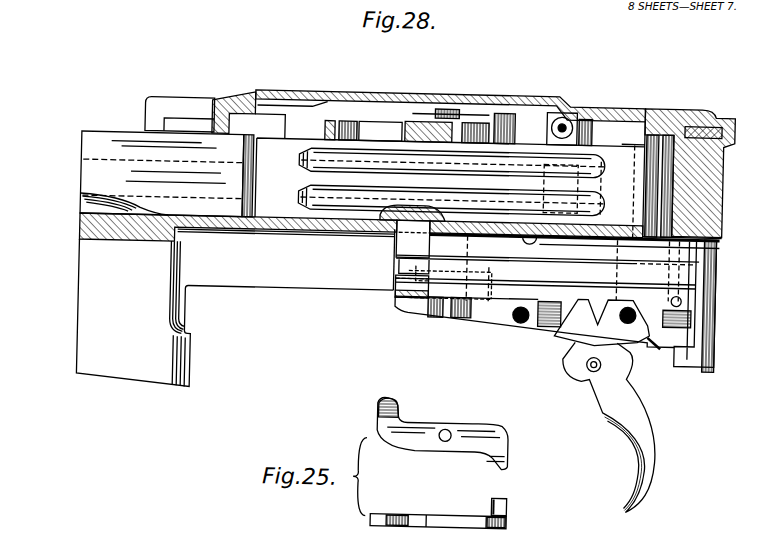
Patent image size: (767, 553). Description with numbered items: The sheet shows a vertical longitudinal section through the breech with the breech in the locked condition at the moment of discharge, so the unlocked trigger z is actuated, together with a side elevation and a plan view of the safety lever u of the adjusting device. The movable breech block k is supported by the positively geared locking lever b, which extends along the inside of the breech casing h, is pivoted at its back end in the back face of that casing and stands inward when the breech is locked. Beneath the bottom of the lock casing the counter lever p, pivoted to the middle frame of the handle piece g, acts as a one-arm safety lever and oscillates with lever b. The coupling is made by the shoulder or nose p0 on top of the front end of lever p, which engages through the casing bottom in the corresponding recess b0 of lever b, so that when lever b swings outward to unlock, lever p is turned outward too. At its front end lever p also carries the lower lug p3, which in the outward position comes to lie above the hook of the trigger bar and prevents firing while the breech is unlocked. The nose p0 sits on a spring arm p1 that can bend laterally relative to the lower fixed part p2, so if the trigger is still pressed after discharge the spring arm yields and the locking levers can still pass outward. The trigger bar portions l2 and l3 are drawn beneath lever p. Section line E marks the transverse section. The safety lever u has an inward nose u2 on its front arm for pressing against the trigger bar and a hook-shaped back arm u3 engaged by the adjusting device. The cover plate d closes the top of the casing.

In FIG. 28, the breech block k is at (167, 174).
In FIG. 28, the top cover plate d is at (638, 100).
In FIG. 28, the breech casing h is at (702, 186).
In FIG. 28, the locking lever b is at (452, 174).
In FIG. 28, the recess b0 is at (425, 200).
In FIG. 28, the shoulder or nose p0 is at (398, 200).
In FIG. 28, the counter lever p is at (690, 249).
In FIG. 28, the spring arm p1 is at (404, 236).
In FIG. 28, the lower fixed part p2 is at (400, 262).
In FIG. 28, the lower shoulder or lug p3 is at (397, 280).
In FIG. 28, the lever bar l2 is at (483, 312).
In FIG. 28, the lever hook l3 is at (425, 278).
In FIG. 28, the handle piece g is at (300, 283).
In FIG. 28, the trigger z is at (653, 425).
In FIG. 28, the section line E— E is at (418, 42).
In FIG. 25, the double arm lever u is at (498, 421).
In FIG. 25, the shoulder or nose u2 is at (512, 488).
In FIG. 25, the back arm u3 is at (402, 396).